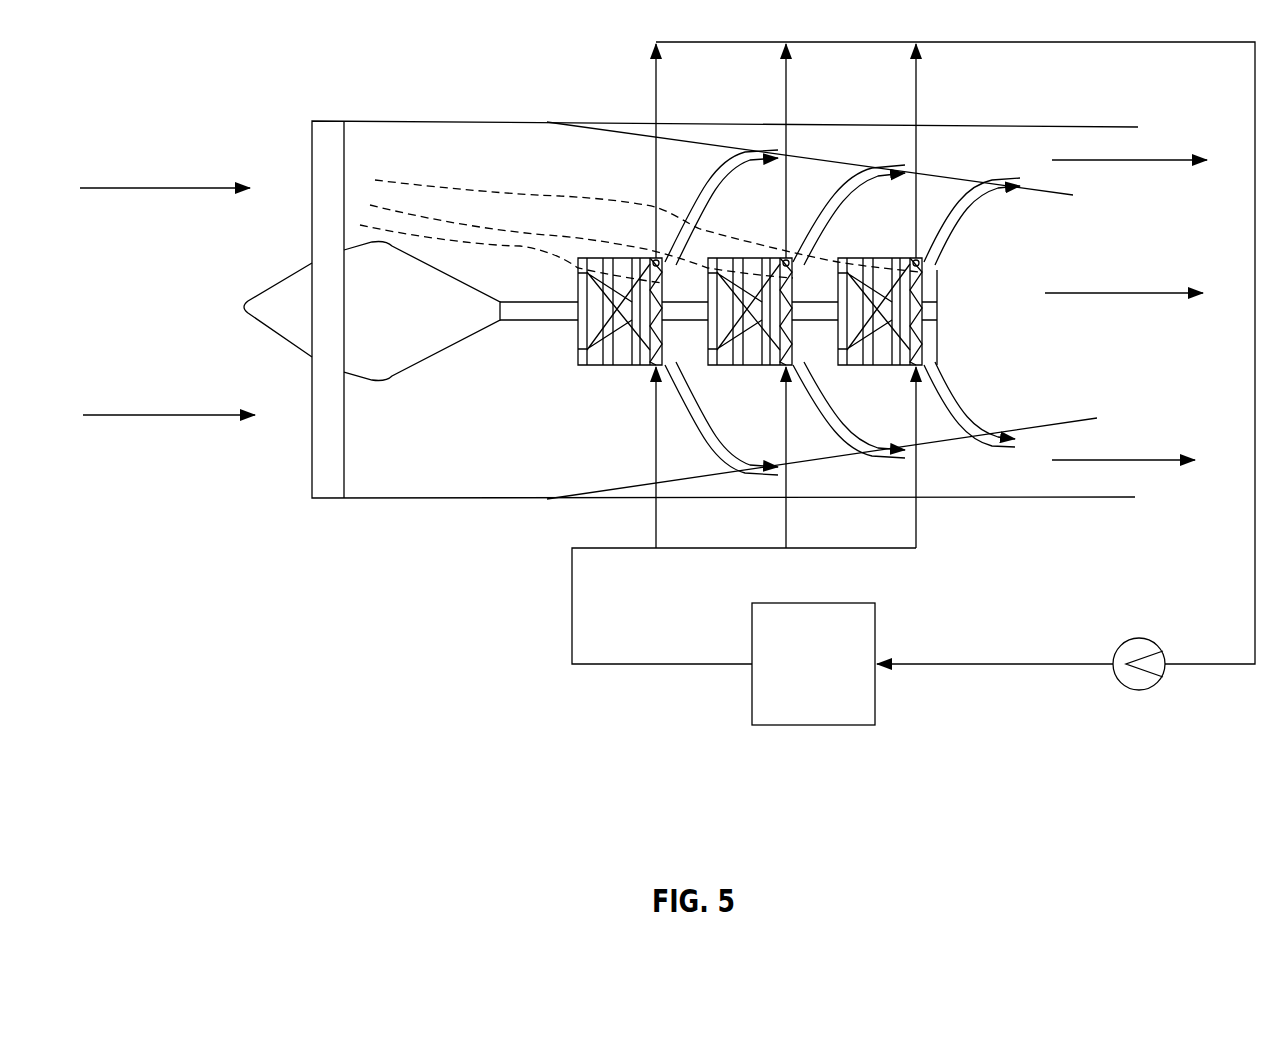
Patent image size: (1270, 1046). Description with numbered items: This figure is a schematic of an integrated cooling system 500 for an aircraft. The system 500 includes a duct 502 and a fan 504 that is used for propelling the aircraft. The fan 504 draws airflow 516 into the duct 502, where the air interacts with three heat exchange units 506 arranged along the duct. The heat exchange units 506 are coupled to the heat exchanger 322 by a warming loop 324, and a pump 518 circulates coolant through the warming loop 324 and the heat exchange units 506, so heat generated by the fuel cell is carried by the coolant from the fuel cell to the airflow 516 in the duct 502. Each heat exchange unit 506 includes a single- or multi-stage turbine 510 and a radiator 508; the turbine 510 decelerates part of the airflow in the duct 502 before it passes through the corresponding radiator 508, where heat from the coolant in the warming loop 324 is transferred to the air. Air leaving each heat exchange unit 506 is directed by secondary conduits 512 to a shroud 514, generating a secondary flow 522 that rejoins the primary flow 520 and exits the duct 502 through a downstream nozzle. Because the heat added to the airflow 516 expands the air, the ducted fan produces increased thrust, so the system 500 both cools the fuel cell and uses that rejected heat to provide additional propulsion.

The integrated cooling system 500 is at (542, 64).
The duct 502 is at (415, 121).
The fan 504 is at (326, 151).
The heat exchange unit 506 is at (893, 250).
The radiator 508 is at (656, 260).
The multistage turbine 510 is at (758, 258).
The secondary conduit 512 is at (690, 198).
The shroud 514 is at (1078, 419).
The airflow 516 is at (137, 416).
The pump 518 is at (1157, 646).
The primary flow 520 is at (1152, 292).
The secondary flow 522 is at (1178, 163).
The heat exchanger 322 is at (796, 711).
The warming loop 324 is at (572, 575).